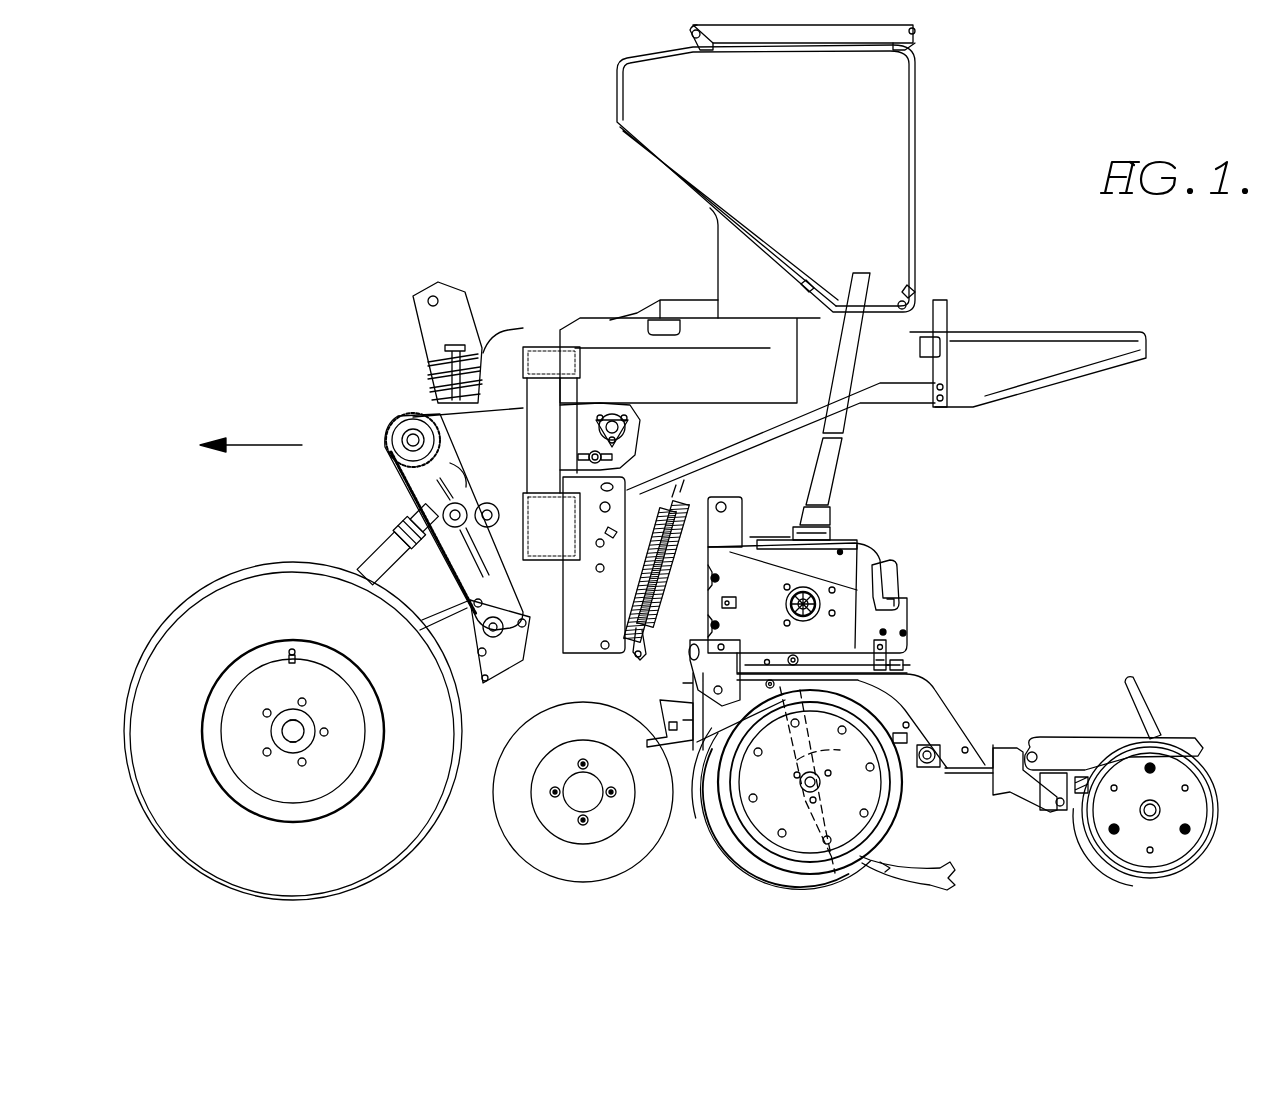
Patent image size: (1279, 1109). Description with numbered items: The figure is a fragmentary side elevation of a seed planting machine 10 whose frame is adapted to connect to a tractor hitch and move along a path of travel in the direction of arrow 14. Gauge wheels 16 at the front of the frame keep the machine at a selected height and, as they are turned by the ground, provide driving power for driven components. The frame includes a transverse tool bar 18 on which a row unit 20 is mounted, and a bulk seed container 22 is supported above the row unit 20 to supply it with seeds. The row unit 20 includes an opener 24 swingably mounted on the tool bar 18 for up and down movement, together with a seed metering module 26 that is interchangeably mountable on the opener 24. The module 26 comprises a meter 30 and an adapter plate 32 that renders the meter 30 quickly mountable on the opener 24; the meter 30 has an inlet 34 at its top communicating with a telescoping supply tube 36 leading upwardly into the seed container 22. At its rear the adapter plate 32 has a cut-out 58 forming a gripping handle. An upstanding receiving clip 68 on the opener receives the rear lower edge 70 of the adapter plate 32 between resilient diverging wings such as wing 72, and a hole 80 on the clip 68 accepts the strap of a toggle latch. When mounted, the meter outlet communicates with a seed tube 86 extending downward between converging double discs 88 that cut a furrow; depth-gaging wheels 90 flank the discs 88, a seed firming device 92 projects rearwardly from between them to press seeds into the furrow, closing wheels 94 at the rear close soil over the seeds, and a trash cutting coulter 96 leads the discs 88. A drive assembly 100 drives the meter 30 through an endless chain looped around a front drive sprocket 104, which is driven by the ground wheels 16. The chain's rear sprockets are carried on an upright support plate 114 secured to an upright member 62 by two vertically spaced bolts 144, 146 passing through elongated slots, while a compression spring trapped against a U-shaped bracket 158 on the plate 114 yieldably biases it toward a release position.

The seed planting machine 10 is at (555, 203).
The arrow 14 is at (250, 445).
The gauge wheels 16 is at (210, 608).
The transverse tool bar 18 is at (542, 493).
The row unit 20 is at (879, 506).
The bulk seed container 22 is at (923, 145).
The opener 24 is at (978, 705).
The seed metering module 26 is at (914, 563).
The meter 30 is at (765, 523).
The adapter plate 32 is at (912, 613).
The inlet 34 is at (803, 513).
The telescoping supply tube 36 is at (832, 462).
The cut-out 58 is at (902, 584).
The upright member 62 is at (726, 505).
The receiving clip 68 is at (927, 661).
The rear lower edge 70 is at (857, 675).
The wing 72 is at (877, 648).
The hole 80 is at (905, 662).
The seed tube 86 is at (823, 753).
The double discs 88 is at (748, 868).
The depth-gaging wheels 90 is at (893, 807).
The seed firming device 92 is at (952, 885).
The closing wheels 94 is at (1198, 790).
The trash cutting coulter 96 is at (524, 846).
The drive assembly 100 is at (613, 530).
The front drive sprocket 104 is at (626, 584).
The upright support plate 114 is at (838, 578).
The bolt 144 is at (719, 578).
The bolt 146 is at (719, 627).
The U-shaped bracket 158 is at (737, 604).